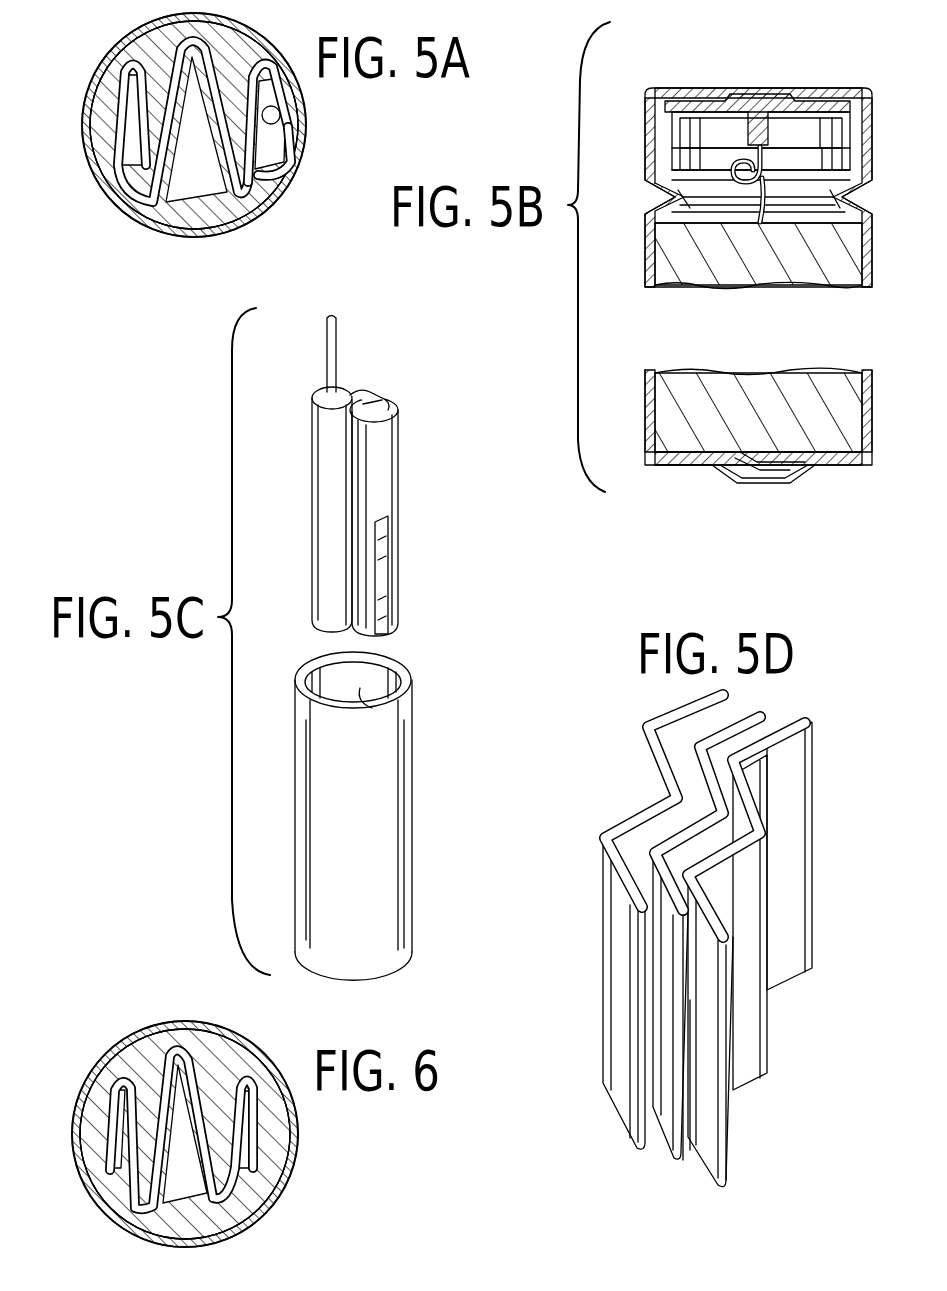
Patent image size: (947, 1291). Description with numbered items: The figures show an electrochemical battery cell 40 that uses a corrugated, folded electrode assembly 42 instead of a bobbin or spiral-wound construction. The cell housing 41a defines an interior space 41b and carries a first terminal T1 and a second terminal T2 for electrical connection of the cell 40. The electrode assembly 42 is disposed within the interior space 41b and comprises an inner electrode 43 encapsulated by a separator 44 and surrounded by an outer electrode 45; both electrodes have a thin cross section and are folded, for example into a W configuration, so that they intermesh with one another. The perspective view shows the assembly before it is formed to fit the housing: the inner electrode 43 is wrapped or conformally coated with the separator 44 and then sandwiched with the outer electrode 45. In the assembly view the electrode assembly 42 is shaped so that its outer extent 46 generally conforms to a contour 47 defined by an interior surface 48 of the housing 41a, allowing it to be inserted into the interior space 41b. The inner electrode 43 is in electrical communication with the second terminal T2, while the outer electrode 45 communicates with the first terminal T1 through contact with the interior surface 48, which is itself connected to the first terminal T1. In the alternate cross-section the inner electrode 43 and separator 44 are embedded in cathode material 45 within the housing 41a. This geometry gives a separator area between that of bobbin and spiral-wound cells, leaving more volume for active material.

In FIG. 5B, the electrochemical battery cell 40 is at (732, 265).
In FIG. 5B, the cell housing 41a is at (656, 165).
In FIG. 5C, the cell housing 41a is at (382, 802).
In FIG. 5B, the interior space 41b is at (722, 213).
In FIG. 5C, the interior space 41b is at (347, 673).
In FIG. 5A, the electrode assembly 42 is at (138, 66).
In FIG. 5C, the electrode assembly 42 is at (359, 476).
In FIG. 5D, the electrode assembly 42 is at (692, 955).
In FIG. 6, the electrode assembly 42 is at (185, 1134).
In FIG. 5A, the inner electrode 43 is at (284, 170).
In FIG. 5D, the inner electrode 43 is at (681, 1150).
In FIG. 5A, the separator 44 is at (287, 138).
In FIG. 5D, the separator 44 is at (667, 1114).
In FIG. 5A, the outer electrode 45 is at (262, 202).
In FIG. 5D, the outer electrode 45 is at (612, 1110).
In FIG. 5A, the outer extent 46 is at (92, 150).
In FIG. 5C, the outer extent 46 is at (399, 458).
In FIG. 6, the outer extent 46 is at (185, 1134).
In FIG. 5C, the contour 47 is at (390, 660).
In FIG. 5C, the interior surface 48 is at (372, 708).
In FIG. 5B, the first terminal T1 is at (776, 484).
In FIG. 5B, the second terminal T2 is at (771, 92).